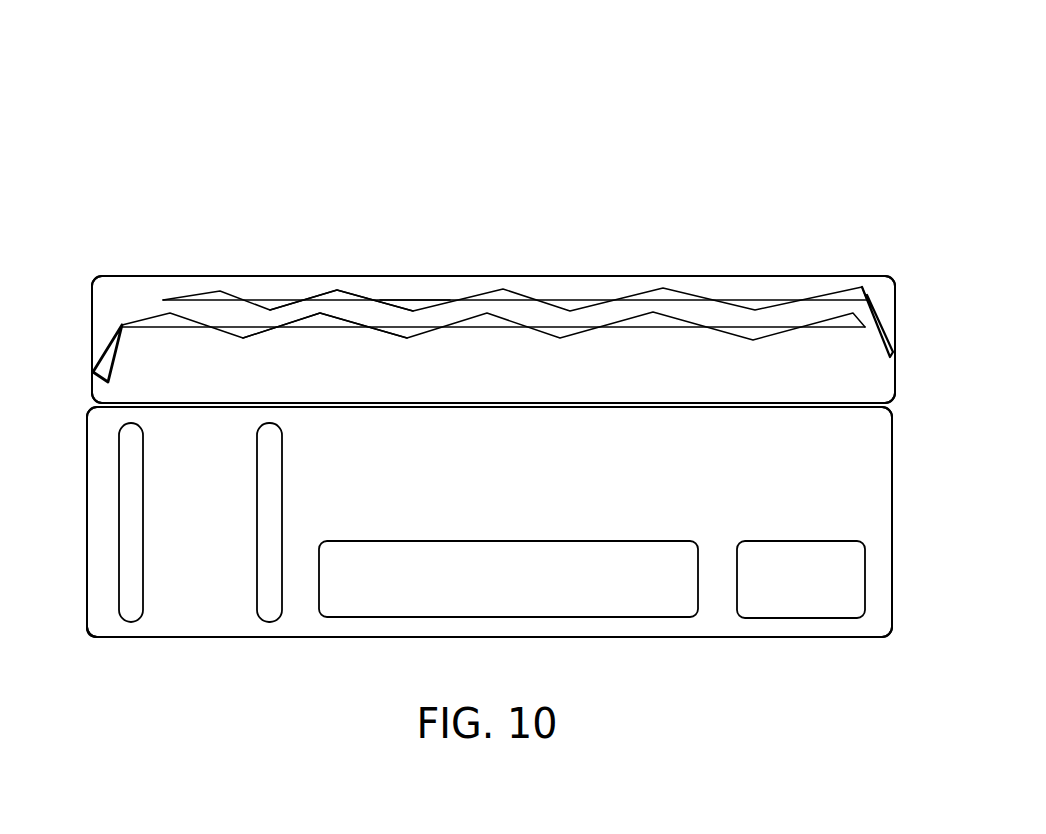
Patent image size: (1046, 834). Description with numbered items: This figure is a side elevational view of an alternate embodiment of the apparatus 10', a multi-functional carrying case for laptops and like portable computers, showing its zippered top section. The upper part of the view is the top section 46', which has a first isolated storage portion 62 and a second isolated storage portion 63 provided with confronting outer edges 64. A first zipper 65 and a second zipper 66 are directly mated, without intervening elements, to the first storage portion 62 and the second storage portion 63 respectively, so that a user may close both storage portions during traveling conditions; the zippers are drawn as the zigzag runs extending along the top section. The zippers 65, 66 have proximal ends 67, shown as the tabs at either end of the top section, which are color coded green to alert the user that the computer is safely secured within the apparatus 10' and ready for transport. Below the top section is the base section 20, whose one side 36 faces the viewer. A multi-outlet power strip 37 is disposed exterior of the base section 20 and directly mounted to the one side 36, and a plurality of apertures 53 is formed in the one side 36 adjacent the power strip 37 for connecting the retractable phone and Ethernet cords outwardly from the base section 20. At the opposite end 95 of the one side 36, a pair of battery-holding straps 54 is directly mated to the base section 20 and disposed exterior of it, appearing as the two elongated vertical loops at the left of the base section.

The apparatus 10' is at (491, 335).
The top section 46' is at (493, 292).
The first zipper 65 is at (214, 298).
The second zipper 66 is at (157, 315).
The first isolated storage portion 62 is at (272, 318).
The second isolated storage portion 63 is at (333, 323).
The confronting outer edges 64 is at (413, 301).
The proximal ends 67 is at (92, 372).
The base section 20 is at (690, 642).
The opposite end 95 is at (103, 625).
The battery-holding straps 54 is at (130, 607).
The one side 36 is at (297, 593).
The multi-outlet power strip 37 is at (347, 603).
The apertures 53 is at (765, 608).